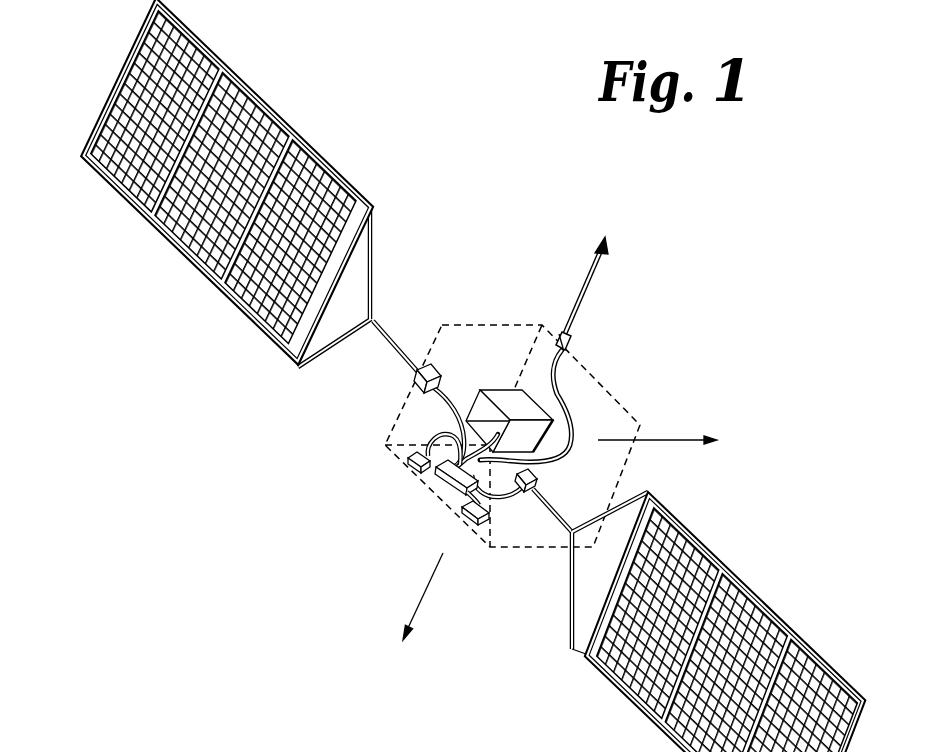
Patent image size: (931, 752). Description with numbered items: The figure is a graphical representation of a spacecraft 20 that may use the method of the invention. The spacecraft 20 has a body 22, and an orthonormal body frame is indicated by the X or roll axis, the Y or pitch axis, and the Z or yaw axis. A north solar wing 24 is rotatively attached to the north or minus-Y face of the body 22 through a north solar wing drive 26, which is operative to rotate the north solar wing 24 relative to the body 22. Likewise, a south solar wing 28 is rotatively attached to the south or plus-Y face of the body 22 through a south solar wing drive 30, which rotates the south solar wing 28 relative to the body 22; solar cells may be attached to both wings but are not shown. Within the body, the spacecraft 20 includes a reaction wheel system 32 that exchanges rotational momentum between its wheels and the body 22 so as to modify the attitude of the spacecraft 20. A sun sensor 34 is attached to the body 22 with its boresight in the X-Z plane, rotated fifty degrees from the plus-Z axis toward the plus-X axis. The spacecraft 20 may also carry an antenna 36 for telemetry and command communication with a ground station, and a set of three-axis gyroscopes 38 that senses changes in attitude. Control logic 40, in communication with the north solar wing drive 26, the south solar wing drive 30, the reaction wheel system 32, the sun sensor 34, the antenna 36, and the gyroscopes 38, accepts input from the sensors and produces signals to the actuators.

The spacecraft 20 is at (632, 304).
The body 22 is at (587, 410).
The north solar wing 24 is at (333, 183).
The north solar wing drive 26 is at (424, 374).
The south solar wing 28 is at (778, 612).
The south solar wing drive 30 is at (533, 495).
The reaction wheel system 32 is at (505, 418).
The sun sensor 34 is at (407, 463).
The antenna 36 is at (575, 307).
The gyroscopes 38 is at (457, 517).
The control logic 40 is at (440, 483).